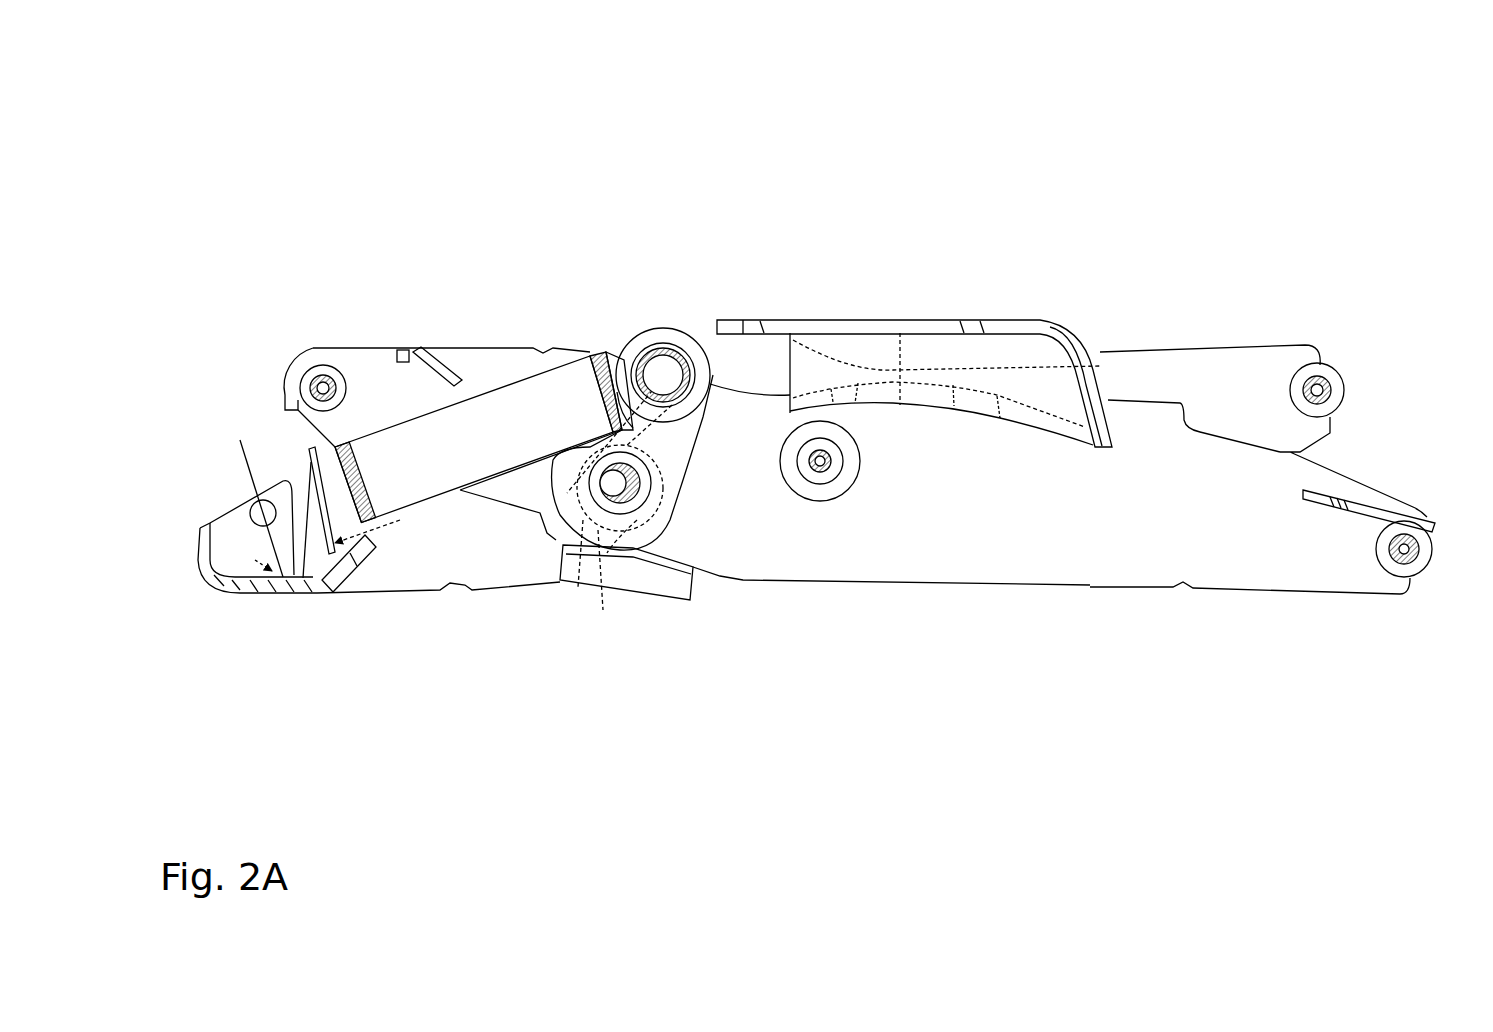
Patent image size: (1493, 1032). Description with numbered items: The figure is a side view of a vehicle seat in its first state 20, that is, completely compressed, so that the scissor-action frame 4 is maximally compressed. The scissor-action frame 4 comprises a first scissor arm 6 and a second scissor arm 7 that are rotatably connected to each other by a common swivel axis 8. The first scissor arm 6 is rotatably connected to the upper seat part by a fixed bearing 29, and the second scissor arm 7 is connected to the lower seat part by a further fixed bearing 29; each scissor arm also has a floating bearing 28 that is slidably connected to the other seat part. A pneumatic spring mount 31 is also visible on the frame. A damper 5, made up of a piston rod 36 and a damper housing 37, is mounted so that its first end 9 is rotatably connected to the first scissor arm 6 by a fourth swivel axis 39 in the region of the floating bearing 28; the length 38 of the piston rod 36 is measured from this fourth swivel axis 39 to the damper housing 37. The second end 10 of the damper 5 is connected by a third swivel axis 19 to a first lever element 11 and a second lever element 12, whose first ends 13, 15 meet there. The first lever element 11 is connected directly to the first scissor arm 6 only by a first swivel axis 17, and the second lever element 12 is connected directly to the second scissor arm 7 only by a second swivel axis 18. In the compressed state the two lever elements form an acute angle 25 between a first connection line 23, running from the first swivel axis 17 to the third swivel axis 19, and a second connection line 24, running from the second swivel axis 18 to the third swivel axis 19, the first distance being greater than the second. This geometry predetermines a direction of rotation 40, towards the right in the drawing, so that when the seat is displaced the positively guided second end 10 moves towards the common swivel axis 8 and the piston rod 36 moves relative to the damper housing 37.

The scissor-action frame 4 is at (1268, 252).
The damper 5 is at (478, 413).
The first scissor arm 6 is at (1071, 447).
The second scissor arm 7 is at (371, 556).
The common swivel axis 8 is at (833, 468).
The first end of damper 9 is at (247, 430).
The second end of damper 10 is at (640, 328).
The first lever element 11 is at (598, 437).
The second lever element 12 is at (693, 592).
The first end of first lever element 13 is at (640, 437).
The first end of second lever element 15 is at (640, 328).
The first swivel axis 17 is at (577, 587).
The second swivel axis 18 is at (597, 560).
The third swivel axis 19 is at (665, 372).
The first state 20 is at (1069, 106).
The first connection line 23 is at (608, 492).
The second connection line 24 is at (660, 507).
The angle 25 is at (628, 355).
The floating bearing 28 is at (320, 350).
The fixed bearing 29 is at (1332, 377).
The pneumatic spring mount 31 is at (1028, 318).
The piston rod 36 is at (299, 455).
The damper housing 37 is at (523, 410).
The length of the piston rod 38 is at (315, 595).
The fourth swivel axis 39 is at (247, 513).
The direction of rotation 40 is at (733, 358).